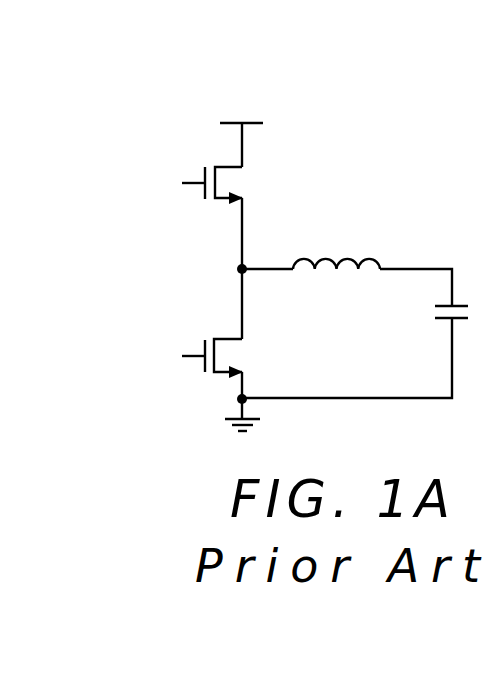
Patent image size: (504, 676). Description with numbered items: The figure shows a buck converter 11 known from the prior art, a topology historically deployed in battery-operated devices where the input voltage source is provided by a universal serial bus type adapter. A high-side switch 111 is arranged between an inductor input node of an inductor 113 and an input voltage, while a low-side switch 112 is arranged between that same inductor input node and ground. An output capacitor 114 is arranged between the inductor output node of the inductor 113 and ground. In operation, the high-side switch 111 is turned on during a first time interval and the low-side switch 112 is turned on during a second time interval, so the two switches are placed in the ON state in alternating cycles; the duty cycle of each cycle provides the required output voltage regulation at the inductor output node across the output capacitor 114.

The buck converter 11 is at (300, 70).
The high-side switch 111 is at (172, 178).
The low-side switch 112 is at (172, 351).
The inductor 113 is at (362, 258).
The output capacitor 114 is at (430, 316).